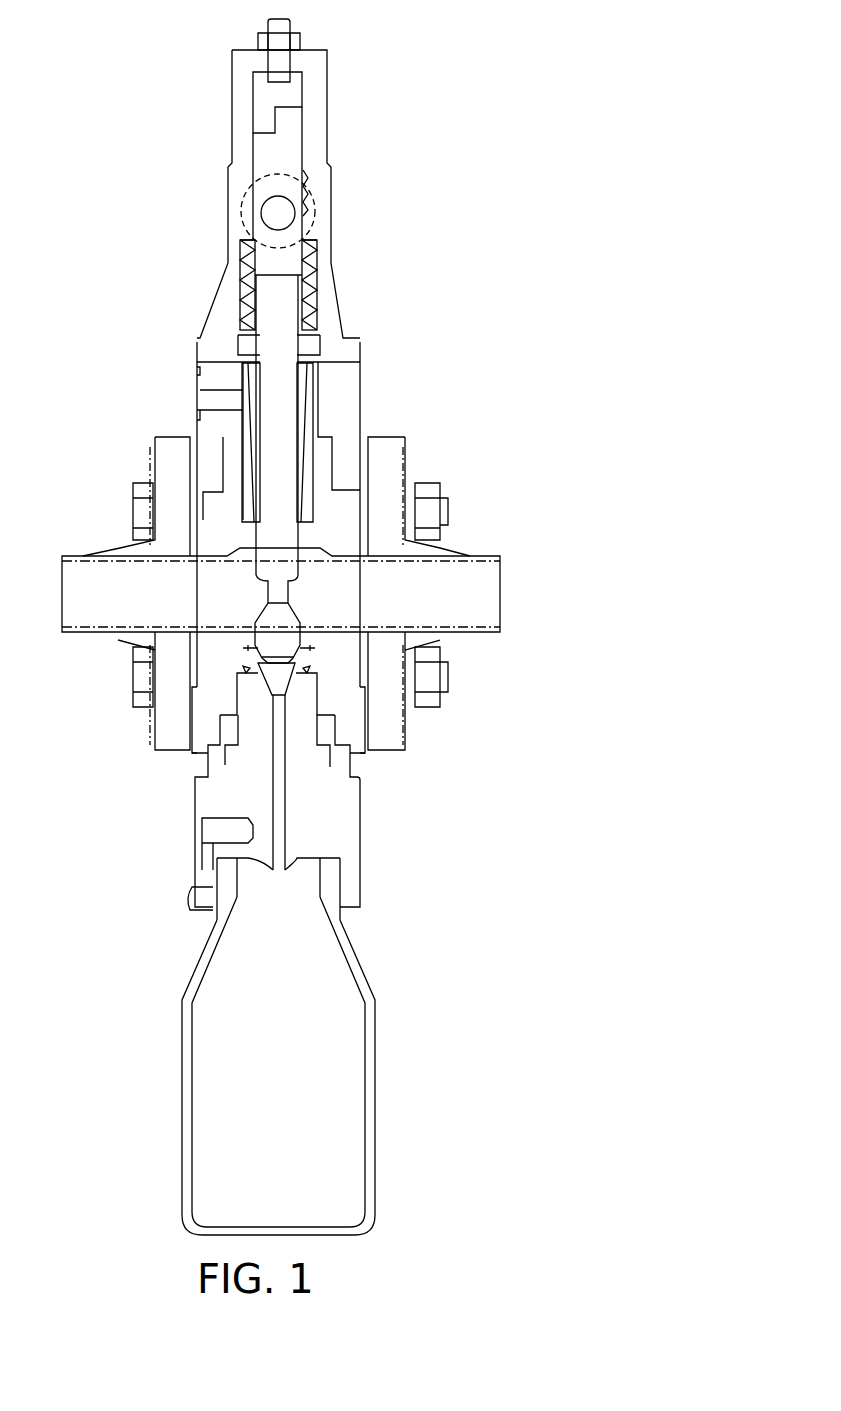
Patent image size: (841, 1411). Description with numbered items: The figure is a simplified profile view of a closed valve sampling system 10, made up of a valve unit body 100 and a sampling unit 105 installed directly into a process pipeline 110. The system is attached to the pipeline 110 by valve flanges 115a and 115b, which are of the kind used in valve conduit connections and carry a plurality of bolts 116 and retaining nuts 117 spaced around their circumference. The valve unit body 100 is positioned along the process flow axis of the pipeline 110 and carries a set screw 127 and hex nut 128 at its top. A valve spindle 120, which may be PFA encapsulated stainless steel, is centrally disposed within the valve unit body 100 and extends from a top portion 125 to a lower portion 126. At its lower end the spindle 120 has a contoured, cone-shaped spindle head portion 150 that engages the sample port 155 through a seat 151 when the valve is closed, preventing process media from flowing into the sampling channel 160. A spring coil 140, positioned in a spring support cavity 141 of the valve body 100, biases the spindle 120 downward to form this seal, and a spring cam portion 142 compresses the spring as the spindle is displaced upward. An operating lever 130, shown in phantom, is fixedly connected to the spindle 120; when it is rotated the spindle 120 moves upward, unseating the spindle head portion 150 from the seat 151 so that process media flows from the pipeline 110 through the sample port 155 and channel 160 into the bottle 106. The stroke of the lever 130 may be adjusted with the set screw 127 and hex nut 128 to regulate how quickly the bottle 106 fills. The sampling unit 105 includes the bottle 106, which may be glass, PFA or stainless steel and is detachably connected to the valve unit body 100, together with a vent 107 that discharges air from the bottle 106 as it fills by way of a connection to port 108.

The sampling system 10 is at (150, 60).
The valve unit body 100 is at (233, 172).
The sampling unit 105 is at (195, 795).
The bottle 106 is at (375, 1095).
The vent 107 is at (205, 835).
The port 108 is at (190, 908).
The process pipeline 110 is at (88, 583).
The valve flange 115a is at (160, 450).
The valve flange 115b is at (400, 460).
The bolts 116 is at (140, 512).
The retaining nuts 117 is at (440, 505).
The valve spindle 120 is at (280, 420).
The top portion 125 is at (345, 100).
The lower portion 126 is at (365, 760).
The set screw 127 is at (286, 18).
The hex nut 128 is at (258, 38).
The operating lever 130 is at (263, 215).
The spring coil 140 is at (240, 320).
The spring support cavity 141 is at (317, 268).
The spring cam portion 142 is at (287, 337).
The spindle head portion 150 is at (273, 638).
The seat 151 is at (257, 652).
The sample port 155 is at (278, 697).
The sampling channel 160 is at (285, 815).